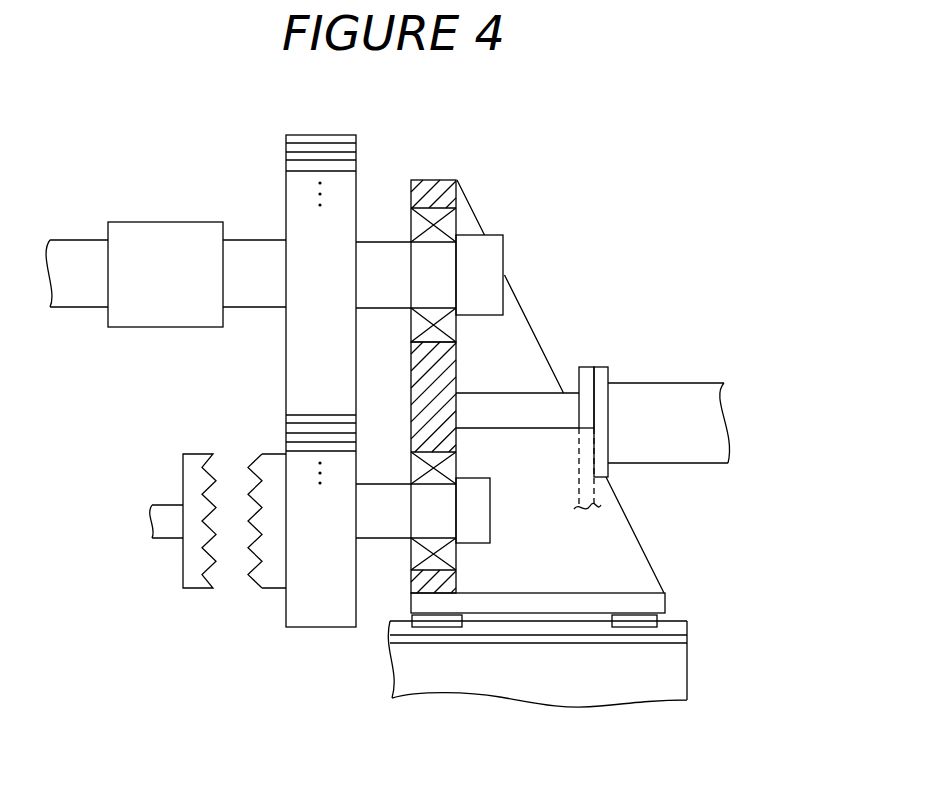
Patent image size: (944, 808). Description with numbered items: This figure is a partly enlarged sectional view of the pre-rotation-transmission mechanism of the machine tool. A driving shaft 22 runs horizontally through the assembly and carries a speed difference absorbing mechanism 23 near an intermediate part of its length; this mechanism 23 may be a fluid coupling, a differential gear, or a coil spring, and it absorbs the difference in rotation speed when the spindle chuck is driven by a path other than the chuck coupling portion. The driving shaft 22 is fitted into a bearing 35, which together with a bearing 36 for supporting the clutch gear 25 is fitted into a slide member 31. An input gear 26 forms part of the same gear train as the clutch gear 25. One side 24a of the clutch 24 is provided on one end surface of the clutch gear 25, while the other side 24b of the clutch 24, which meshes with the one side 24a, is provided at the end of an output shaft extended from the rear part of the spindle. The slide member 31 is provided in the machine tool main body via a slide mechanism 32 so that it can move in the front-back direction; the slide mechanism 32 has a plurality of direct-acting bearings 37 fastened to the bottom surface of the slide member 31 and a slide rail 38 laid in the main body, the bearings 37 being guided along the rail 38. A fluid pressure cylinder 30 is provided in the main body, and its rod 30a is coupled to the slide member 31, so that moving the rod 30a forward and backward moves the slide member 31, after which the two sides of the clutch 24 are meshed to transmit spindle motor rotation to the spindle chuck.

The driving shaft 22 is at (82, 308).
The speed difference absorbing mechanism 23 is at (162, 222).
The clutch 24 is at (218, 536).
The one side of the clutch 24a is at (272, 454).
The other side of the clutch 24b is at (200, 454).
The clutch gear 25 is at (320, 627).
The input gear 26 is at (358, 160).
The fluid pressure cylinder 30 is at (660, 382).
The rod 30a is at (520, 400).
The slide member 31 is at (625, 552).
The slide mechanism 32 is at (714, 618).
The bearing 35 is at (447, 225).
The bearing 36 is at (445, 468).
The direct-acting bearing 37 is at (635, 727).
The slide rail 38 is at (535, 628).